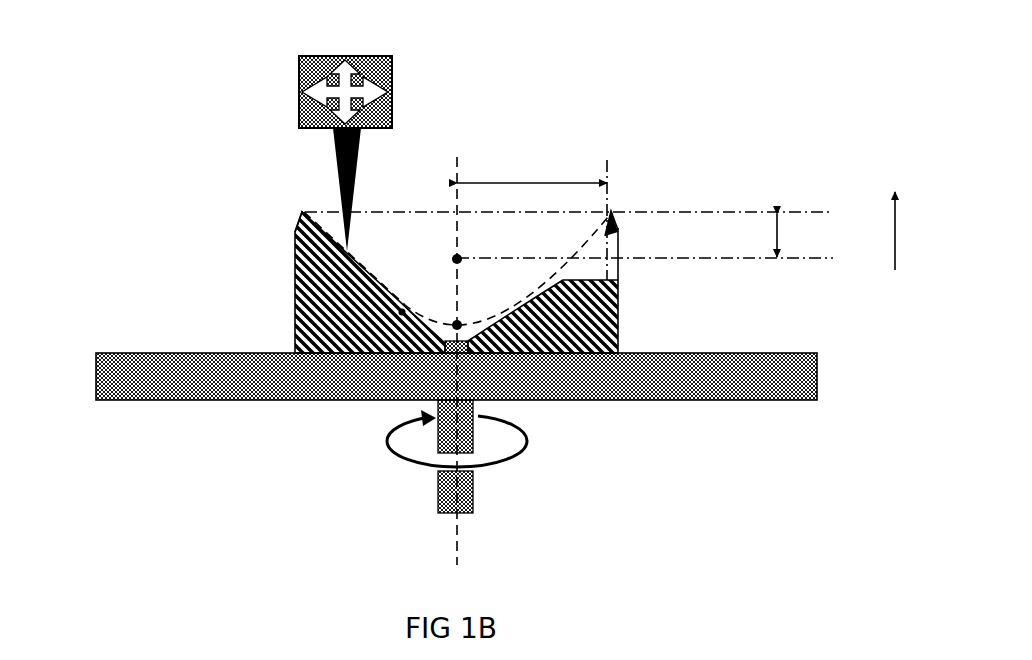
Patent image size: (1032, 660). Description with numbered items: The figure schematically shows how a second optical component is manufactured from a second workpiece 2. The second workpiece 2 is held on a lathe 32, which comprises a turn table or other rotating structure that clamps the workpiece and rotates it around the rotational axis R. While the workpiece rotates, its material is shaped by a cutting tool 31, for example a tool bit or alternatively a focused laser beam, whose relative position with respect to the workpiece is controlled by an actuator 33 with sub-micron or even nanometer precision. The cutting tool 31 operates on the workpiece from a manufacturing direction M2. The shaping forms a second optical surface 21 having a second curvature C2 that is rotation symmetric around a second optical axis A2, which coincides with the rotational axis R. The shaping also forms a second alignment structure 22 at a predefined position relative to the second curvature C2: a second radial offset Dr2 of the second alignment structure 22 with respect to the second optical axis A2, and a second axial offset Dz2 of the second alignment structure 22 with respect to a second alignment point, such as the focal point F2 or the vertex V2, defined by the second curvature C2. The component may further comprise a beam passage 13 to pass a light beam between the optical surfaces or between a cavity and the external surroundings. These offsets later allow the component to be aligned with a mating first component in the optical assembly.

The second workpiece 2 is at (310, 293).
The beam passage 13 is at (610, 275).
The second optical surface 21 is at (374, 283).
The second alignment structure 22 is at (301, 207).
The cutting tool 31 is at (364, 234).
The lathe 32 is at (82, 375).
The actuator 33 is at (291, 96).
The second optical axis A2 is at (457, 157).
The second alignment point F2 is at (440, 272).
The second alignment point V2 is at (473, 316).
The second curvature C2 is at (400, 313).
The rotational axis R is at (457, 453).
The manufacturing direction M2 is at (897, 215).
The second radial offset Dr2 is at (532, 170).
The second axial offset Dz2 is at (803, 235).